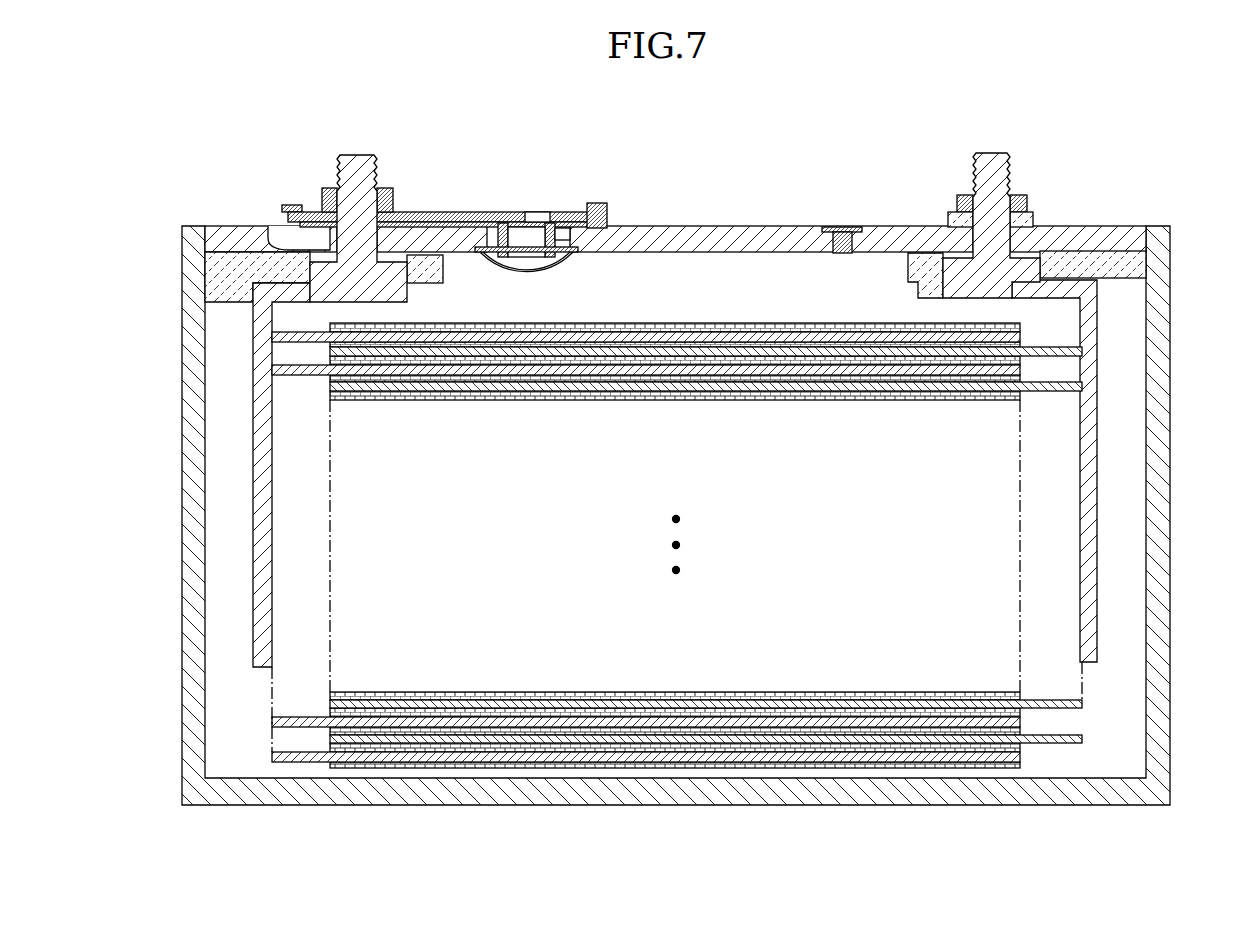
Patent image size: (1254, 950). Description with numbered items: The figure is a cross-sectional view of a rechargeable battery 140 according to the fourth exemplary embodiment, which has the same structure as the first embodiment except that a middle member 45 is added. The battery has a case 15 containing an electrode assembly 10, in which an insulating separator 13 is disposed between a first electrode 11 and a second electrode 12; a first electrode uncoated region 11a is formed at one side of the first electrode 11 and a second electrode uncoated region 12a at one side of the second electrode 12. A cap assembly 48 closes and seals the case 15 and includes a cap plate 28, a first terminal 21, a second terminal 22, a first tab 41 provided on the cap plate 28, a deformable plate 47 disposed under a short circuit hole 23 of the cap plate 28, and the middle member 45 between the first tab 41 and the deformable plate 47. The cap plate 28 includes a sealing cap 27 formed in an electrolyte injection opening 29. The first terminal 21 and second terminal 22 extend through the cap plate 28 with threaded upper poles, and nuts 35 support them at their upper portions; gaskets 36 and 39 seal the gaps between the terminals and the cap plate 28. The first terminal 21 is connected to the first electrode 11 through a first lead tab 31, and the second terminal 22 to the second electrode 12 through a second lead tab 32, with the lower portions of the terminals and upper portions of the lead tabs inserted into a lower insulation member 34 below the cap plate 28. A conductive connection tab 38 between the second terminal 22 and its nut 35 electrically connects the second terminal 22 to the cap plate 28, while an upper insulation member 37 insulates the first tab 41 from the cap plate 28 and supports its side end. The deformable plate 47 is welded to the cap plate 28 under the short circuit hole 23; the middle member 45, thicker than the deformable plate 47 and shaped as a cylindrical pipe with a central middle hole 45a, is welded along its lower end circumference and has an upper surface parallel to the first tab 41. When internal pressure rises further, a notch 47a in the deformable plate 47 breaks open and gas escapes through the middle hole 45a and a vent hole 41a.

The rechargeable battery 140 is at (777, 125).
The electrode assembly 10 is at (677, 595).
The first electrode 11 is at (420, 758).
The first electrode uncoated region 11a is at (293, 758).
The second electrode 12 is at (905, 746).
The second electrode uncoated region 12a is at (1055, 740).
The separator 13 is at (637, 764).
The case 15 is at (1158, 490).
The first terminal 21 is at (360, 155).
The second terminal 22 is at (990, 153).
The short circuit hole 23 is at (562, 234).
The sealing cap 27 is at (838, 228).
The cap plate 28 is at (748, 227).
The electrolyte injection opening 29 is at (838, 254).
The first lead tab 31 is at (258, 521).
The second lead tab 32 is at (1095, 600).
The lower insulation member 34 is at (222, 286).
The nut 35 is at (384, 188).
The gasket 36 is at (323, 247).
The upper insulation member 37 is at (596, 206).
The connection tab 38 is at (1032, 212).
The gasket 39 is at (963, 235).
The first tab 41 is at (436, 212).
The vent hole 41a is at (537, 216).
The middle member 45 is at (499, 240).
The middle hole 45a is at (521, 240).
The deformable plate 47 is at (560, 262).
The notch 47a is at (520, 270).
The cap assembly 48 is at (687, 216).